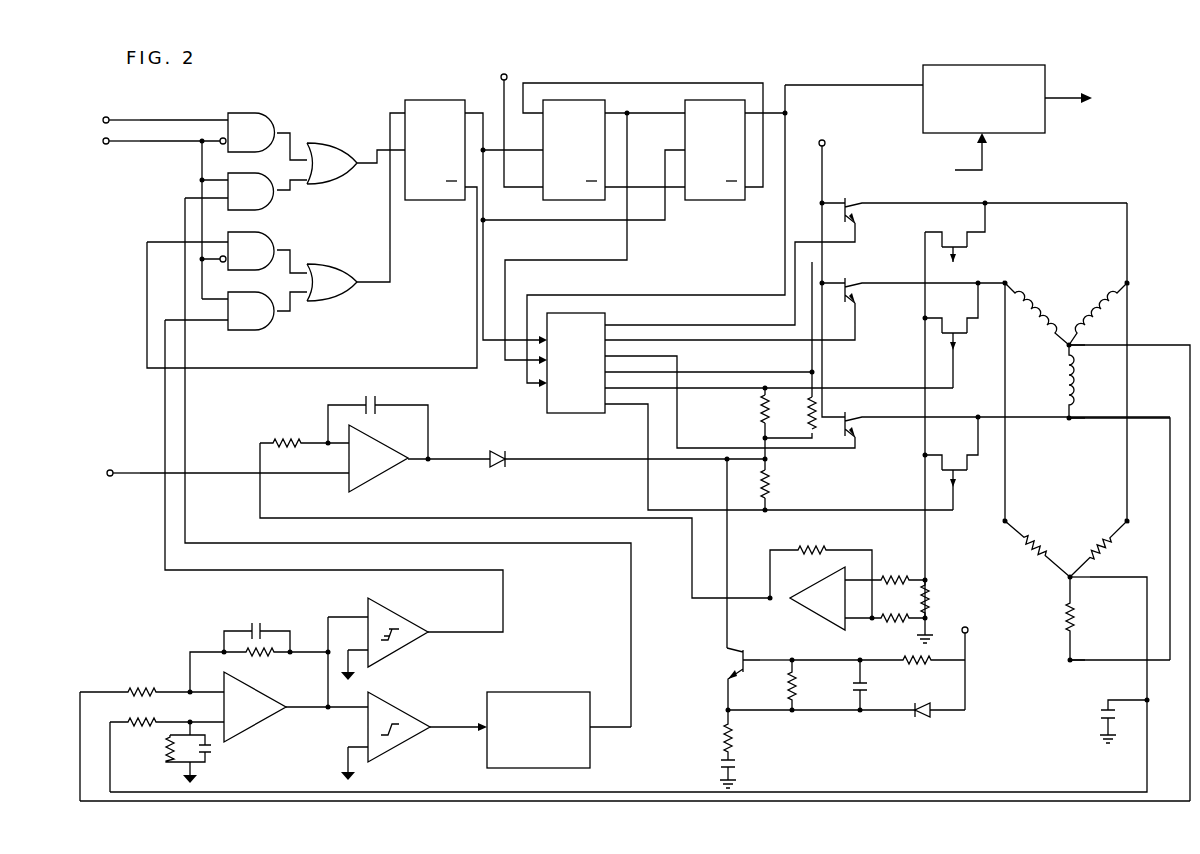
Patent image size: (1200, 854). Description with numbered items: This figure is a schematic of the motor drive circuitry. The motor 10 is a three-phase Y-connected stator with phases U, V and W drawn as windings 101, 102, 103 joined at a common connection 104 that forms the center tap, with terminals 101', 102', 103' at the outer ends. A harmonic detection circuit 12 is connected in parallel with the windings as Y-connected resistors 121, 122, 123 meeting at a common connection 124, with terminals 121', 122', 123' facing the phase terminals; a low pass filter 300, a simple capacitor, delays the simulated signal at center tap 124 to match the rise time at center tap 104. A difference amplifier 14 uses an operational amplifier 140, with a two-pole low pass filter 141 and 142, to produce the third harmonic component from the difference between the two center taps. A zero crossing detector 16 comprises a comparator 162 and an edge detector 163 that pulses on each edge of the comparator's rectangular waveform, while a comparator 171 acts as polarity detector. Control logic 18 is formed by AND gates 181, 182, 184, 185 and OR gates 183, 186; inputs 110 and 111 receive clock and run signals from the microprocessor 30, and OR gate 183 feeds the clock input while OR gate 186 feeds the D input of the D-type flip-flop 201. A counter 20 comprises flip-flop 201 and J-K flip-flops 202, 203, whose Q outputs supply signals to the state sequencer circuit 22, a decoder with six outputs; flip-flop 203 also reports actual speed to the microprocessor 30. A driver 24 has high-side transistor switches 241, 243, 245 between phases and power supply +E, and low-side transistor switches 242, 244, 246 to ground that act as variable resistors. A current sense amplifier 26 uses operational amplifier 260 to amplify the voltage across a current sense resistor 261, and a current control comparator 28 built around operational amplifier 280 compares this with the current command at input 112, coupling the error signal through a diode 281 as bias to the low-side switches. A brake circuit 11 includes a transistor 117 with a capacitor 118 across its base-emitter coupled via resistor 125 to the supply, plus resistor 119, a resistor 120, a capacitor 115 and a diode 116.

The motor 10 is at (1060, 306).
The phase U 101 is at (1100, 314).
The phase V 102 is at (1037, 322).
The phase W 103 is at (1045, 381).
The common connection 104 is at (1070, 330).
The terminal of phase U 101' is at (1149, 267).
The terminal of phase V 102' is at (1031, 265).
The W winding terminal 103' is at (1067, 439).
The brake circuit 11 is at (838, 733).
The input 110 is at (112, 118).
The input 111 is at (110, 145).
The input 112 is at (110, 469).
The capacitor 115 is at (740, 765).
The diode 116 is at (921, 720).
The transistor 117 is at (740, 651).
The capacitor 118 is at (878, 685).
The resistor 119 is at (724, 728).
The resistor 120 is at (788, 690).
The resistor 125 is at (910, 660).
The harmonic detection circuit 12 is at (1068, 549).
The resistor 121 is at (1107, 549).
The resistor 122 is at (1035, 551).
The resistor 123 is at (1038, 618).
The common connection 124 is at (1074, 581).
The terminal of resistor network 121' is at (1148, 503).
The terminal of resistor network 122' is at (976, 530).
The resistor terminal 123' is at (1040, 669).
The difference amplifier 14 is at (248, 737).
The operational amplifier 140 is at (252, 698).
The low pass filter 141 is at (248, 628).
The low pass filter 142 is at (203, 765).
The zero crossing detector 16 is at (490, 669).
The comparator 162 is at (395, 706).
The edge detector 163 is at (532, 693).
The comparator 171 is at (381, 608).
The control logic 18 is at (172, 214).
The AND gate 181 is at (258, 98).
The AND gate 182 is at (276, 206).
The OR gate 183 is at (345, 128).
The AND gate 184 is at (272, 242).
The AND gate 185 is at (262, 330).
The OR gate 186 is at (335, 298).
The counter 20 is at (658, 242).
The D-type flip-flop circuit 201 is at (445, 203).
The J-K flip-flop circuit 202 is at (543, 200).
The J-K flip-flop circuit 203 is at (717, 201).
The state sequencer circuit 22 is at (545, 406).
The driver 24 is at (860, 461).
The transistor switch 241 is at (858, 220).
The transistor switch 242 is at (960, 250).
The transistor switch 243 is at (855, 286).
The transistor switch 244 is at (958, 338).
The transistor switch 245 is at (862, 430).
The transistor switch 246 is at (958, 472).
The current sense amplifier 26 is at (816, 620).
The operational amplifier 260 is at (826, 590).
The current sense resistor 261 is at (929, 600).
The current control comparator 28 is at (372, 489).
The operational amplifier 280 is at (372, 456).
The diode 281 is at (500, 470).
The microprocessor 30 is at (1028, 136).
The low pass filter 300 is at (1102, 712).